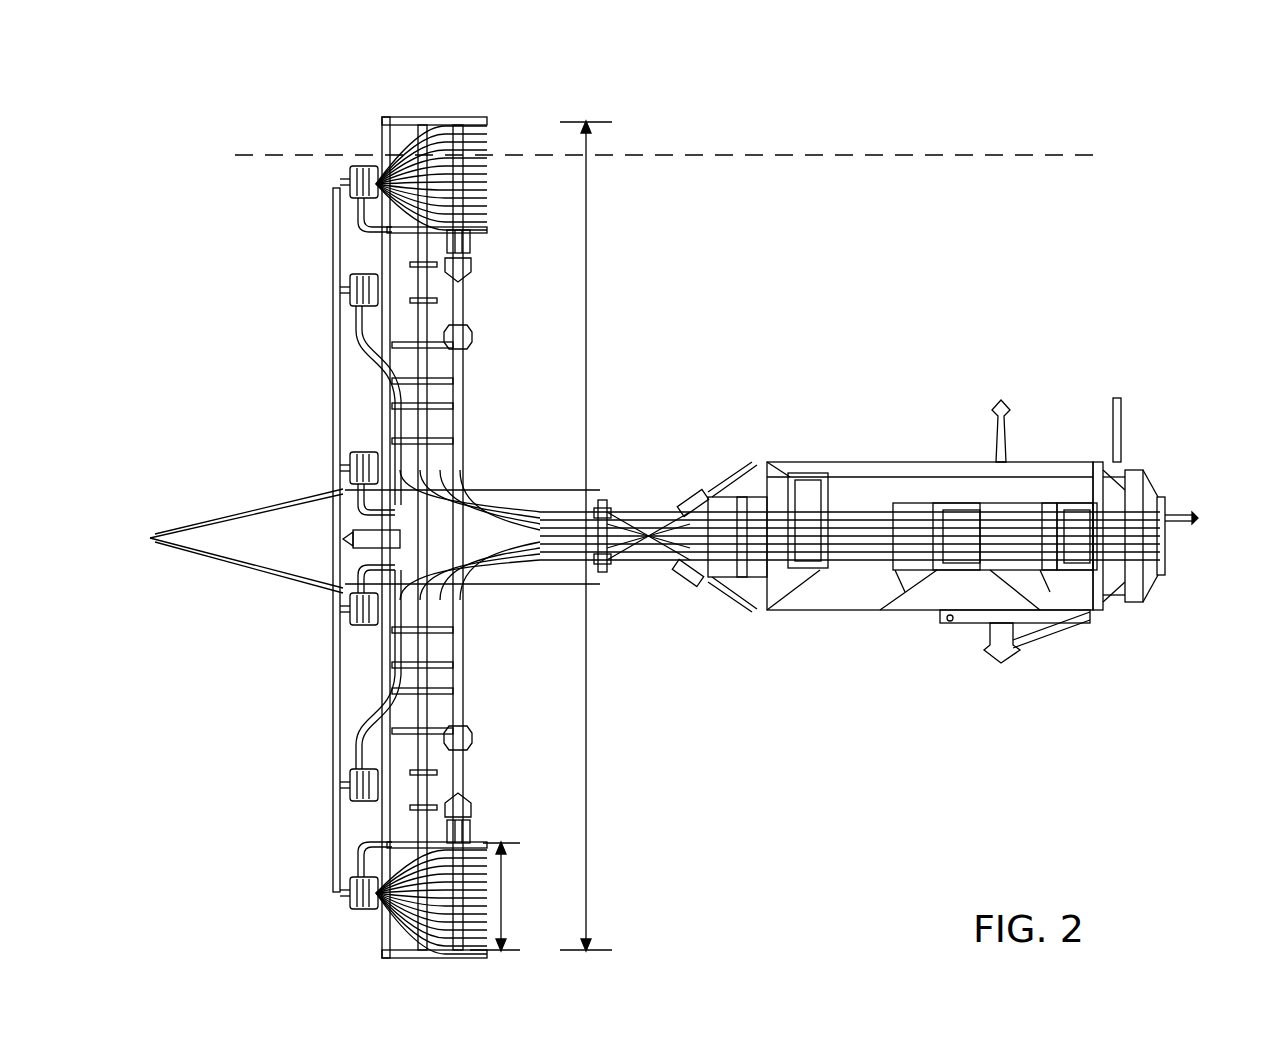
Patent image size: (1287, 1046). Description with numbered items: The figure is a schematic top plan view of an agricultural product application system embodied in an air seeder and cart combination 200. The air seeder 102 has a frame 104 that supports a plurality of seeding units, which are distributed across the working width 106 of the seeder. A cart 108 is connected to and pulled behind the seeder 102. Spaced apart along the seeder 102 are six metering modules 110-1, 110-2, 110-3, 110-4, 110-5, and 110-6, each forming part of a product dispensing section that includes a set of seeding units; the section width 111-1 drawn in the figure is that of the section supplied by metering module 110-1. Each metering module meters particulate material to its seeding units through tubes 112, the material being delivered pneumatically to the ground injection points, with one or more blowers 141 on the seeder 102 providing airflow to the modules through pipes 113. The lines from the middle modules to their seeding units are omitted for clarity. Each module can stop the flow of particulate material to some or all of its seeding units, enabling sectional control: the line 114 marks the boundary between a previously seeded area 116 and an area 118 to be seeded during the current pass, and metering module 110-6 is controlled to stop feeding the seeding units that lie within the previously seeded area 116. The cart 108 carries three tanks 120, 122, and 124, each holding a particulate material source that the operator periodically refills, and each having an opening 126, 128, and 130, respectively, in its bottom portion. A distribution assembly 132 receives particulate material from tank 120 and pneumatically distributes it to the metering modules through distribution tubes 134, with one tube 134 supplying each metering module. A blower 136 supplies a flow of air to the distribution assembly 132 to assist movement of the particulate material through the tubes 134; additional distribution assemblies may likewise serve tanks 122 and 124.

The air seeder 102 is at (492, 326).
The frame 104 is at (465, 712).
The working width 106 is at (586, 240).
The cart 108 is at (967, 420).
The metering module 110-1 is at (352, 897).
The metering module 110-2 is at (350, 790).
The metering module 110-3 is at (350, 618).
The metering module 110-4 is at (350, 466).
The metering module 110-5 is at (350, 295).
The metering module 110-6 is at (350, 182).
The section width 111-1 is at (503, 885).
The tubes 112 is at (480, 118).
The pipes 113 is at (333, 398).
The line 114 is at (722, 154).
The previously seeded area 116 is at (908, 113).
The area to be seeded 118 is at (908, 236).
The tank 120 is at (833, 592).
The tank 122 is at (930, 598).
The tank 124 is at (1077, 595).
The opening 126 is at (848, 500).
The opening 128 is at (958, 505).
The opening 130 is at (1068, 505).
The distribution assembly 132 is at (880, 495).
The distribution tubes 134 is at (360, 340).
The blower 136 is at (1185, 512).
The blower 141 is at (352, 539).
The air seeder and cart combination 200 is at (1200, 170).